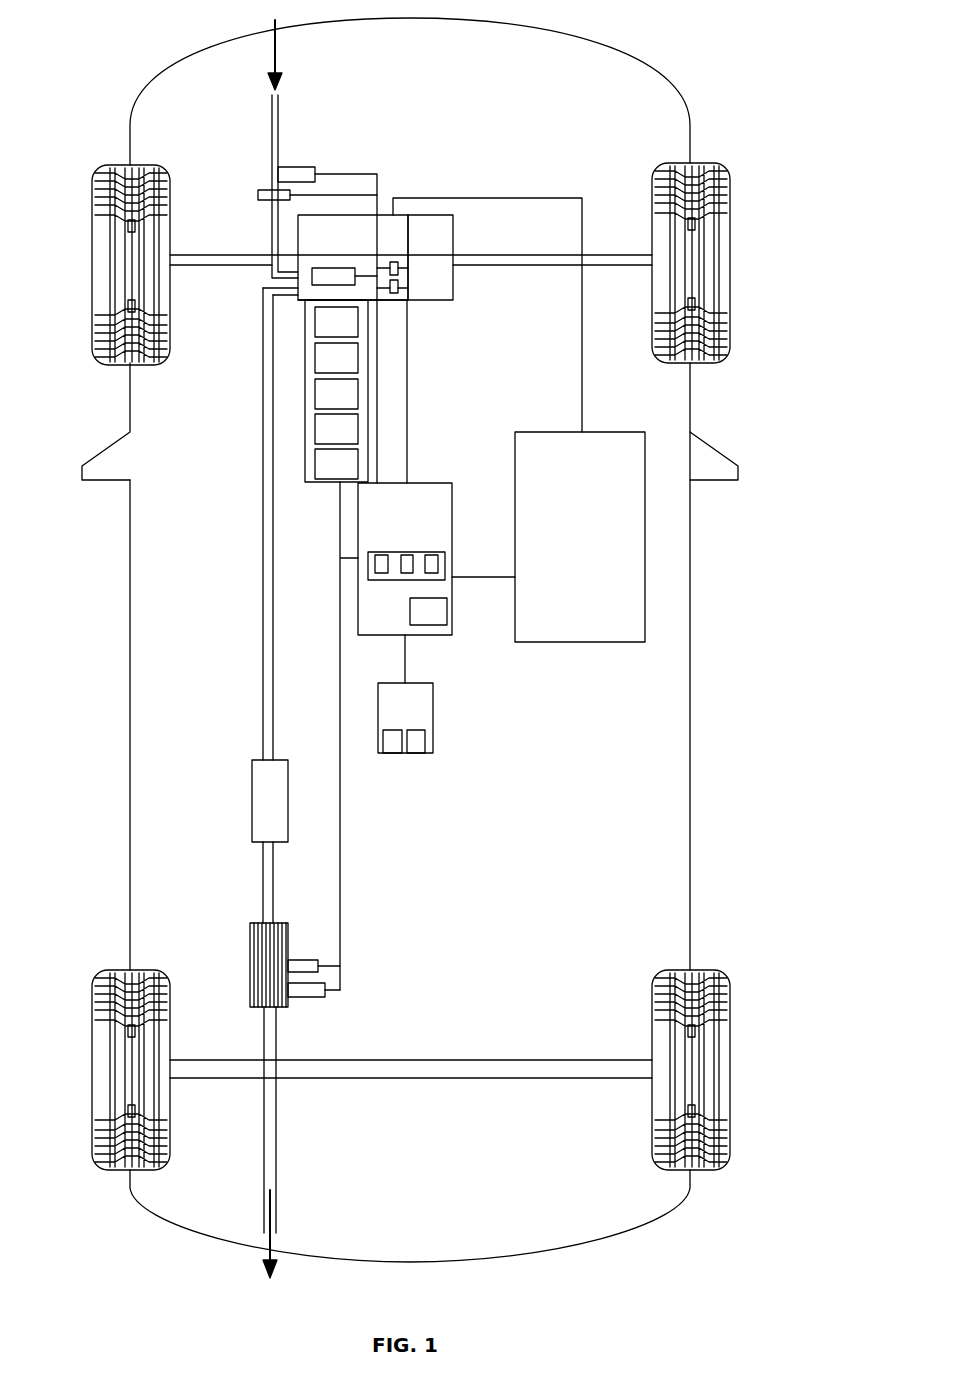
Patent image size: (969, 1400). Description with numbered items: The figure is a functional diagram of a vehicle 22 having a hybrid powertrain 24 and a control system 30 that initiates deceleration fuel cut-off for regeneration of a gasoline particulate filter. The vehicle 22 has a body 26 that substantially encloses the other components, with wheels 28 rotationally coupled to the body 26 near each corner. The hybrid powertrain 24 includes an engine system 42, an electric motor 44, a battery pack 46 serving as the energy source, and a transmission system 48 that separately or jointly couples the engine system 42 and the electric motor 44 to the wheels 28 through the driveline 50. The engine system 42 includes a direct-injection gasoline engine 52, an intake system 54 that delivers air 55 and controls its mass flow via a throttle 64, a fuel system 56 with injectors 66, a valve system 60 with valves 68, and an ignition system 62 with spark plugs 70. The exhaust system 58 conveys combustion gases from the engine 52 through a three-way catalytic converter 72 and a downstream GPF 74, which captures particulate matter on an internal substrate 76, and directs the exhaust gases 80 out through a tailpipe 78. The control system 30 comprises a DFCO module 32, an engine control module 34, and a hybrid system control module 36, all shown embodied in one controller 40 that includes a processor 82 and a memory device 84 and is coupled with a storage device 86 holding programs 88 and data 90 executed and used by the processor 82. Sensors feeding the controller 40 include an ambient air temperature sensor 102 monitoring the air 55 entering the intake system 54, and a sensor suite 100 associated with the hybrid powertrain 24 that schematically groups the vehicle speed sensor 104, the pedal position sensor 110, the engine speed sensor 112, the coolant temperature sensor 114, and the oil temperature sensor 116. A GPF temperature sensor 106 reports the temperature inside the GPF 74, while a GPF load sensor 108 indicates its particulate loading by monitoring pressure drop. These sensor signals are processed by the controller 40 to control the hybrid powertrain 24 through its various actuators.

The vehicle 22 is at (660, 36).
The hybrid powertrain 24 is at (407, 178).
The body 26 is at (130, 713).
The wheels 28 is at (731, 1070).
The control system 30 is at (442, 460).
The DFCO module 32 is at (380, 556).
The engine control module 34 is at (405, 556).
The hybrid system control module 36 is at (432, 555).
The controller 40 is at (421, 509).
The engine system 42 is at (243, 282).
The electric motor 44 is at (355, 247).
The battery pack 46 is at (590, 548).
The transmission system 48 is at (443, 244).
The driveline 50 is at (526, 278).
The engine 52 is at (368, 294).
The intake system 54 is at (289, 116).
The air 55 is at (272, 50).
The fuel system 56 is at (418, 256).
The exhaust system 58 is at (262, 630).
The valve system 60 is at (306, 262).
The ignition system 62 is at (399, 288).
The throttle 64 is at (258, 195).
The injectors 66 is at (399, 268).
The valves 68 is at (328, 278).
The spark plugs 70 is at (413, 293).
The three-way catalytic converter 72 is at (282, 812).
The GPF 74 is at (250, 950).
The internal substrate 76 is at (262, 993).
The tailpipe 78 is at (262, 1212).
The exhaust gases 80 is at (266, 1262).
The processor 82 is at (388, 582).
The memory device 84 is at (428, 622).
The storage device 86 is at (420, 726).
The programs 88 is at (394, 753).
The data 90 is at (420, 745).
The sensor suite 100 is at (311, 492).
The ambient air temperature sensor 102 is at (316, 170).
The vehicle speed sensor 104 is at (354, 332).
The GPF temperature sensor 106 is at (312, 962).
The GPF load sensor 108 is at (315, 998).
The pedal position sensor 110 is at (354, 368).
The engine speed sensor 112 is at (354, 404).
The coolant temperature sensor 114 is at (354, 439).
The oil temperature sensor 116 is at (354, 474).